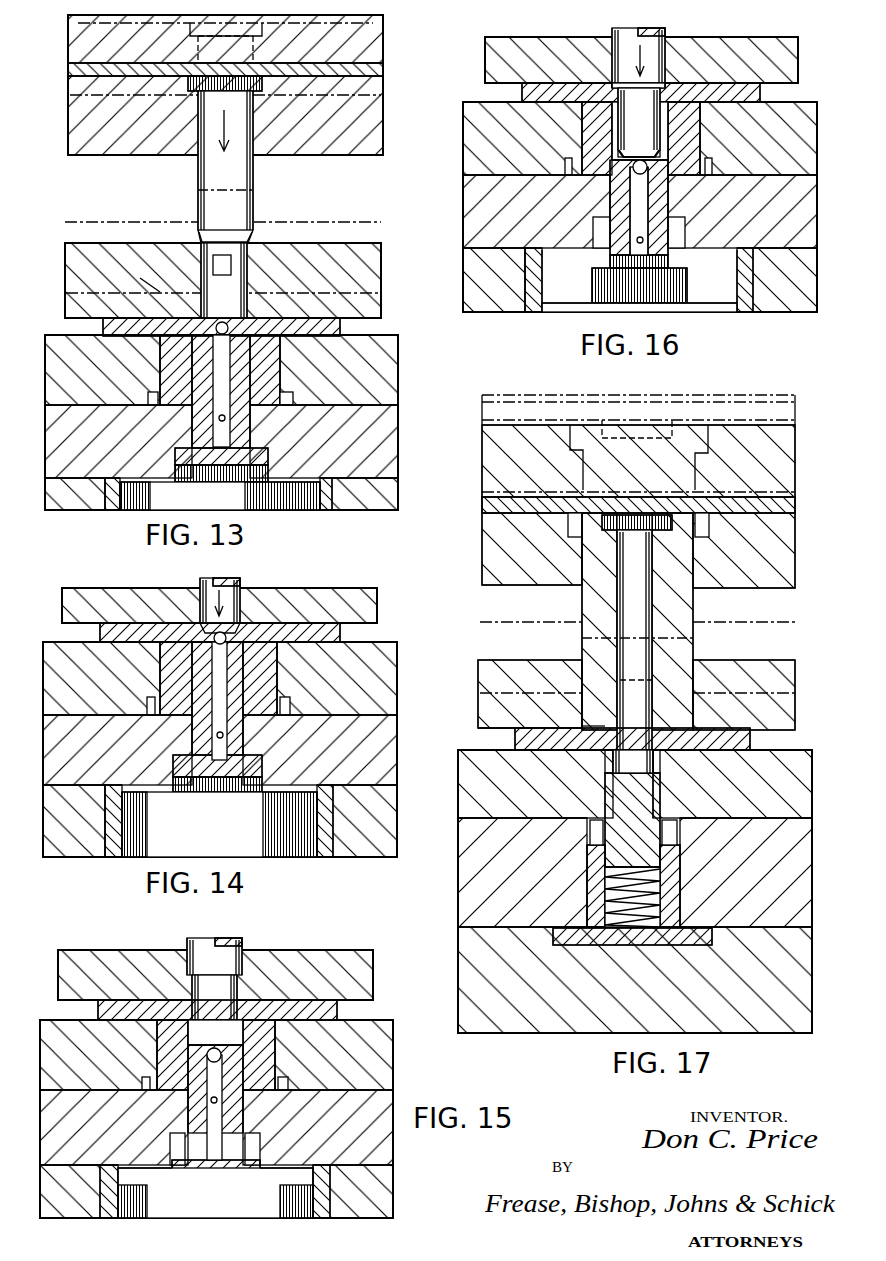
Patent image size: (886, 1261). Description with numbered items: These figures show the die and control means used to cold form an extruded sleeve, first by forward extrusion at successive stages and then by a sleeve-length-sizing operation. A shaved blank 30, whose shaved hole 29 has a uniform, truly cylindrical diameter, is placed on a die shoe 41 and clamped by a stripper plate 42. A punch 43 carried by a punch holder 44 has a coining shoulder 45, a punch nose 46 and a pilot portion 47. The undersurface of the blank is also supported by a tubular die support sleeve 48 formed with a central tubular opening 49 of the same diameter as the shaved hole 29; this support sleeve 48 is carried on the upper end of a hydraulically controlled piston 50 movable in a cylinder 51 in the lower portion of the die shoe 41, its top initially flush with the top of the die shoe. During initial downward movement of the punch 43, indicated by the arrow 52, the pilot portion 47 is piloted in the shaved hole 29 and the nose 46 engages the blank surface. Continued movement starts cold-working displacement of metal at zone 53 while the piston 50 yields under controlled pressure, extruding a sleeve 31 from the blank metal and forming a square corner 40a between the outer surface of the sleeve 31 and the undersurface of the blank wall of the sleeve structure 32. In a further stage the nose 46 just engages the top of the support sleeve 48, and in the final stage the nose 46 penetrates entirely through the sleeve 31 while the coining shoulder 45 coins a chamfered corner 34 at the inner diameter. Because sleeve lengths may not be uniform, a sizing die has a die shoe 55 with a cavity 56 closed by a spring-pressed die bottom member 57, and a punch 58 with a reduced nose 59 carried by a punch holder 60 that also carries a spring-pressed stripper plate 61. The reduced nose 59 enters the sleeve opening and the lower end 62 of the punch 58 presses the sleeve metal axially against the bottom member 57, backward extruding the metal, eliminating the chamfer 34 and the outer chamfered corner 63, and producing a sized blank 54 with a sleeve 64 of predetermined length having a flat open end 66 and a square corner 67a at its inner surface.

In FIG. 13, the shaved hole 29 is at (140, 277).
In FIG. 13, the shaved blank 30 is at (344, 330).
In FIG. 14, the shaved blank 30 is at (345, 637).
In FIG. 16, the sleeve 31 is at (530, 114).
In FIG. 16, the sleeve structure 32 is at (762, 96).
In FIG. 16, the chamfered corner 34 is at (667, 94).
In FIG. 15, the square corner 40a is at (246, 1026).
In FIG. 16, the square corner 40a is at (670, 115).
In FIG. 13, the die shoe 41 is at (364, 372).
In FIG. 13, the stripper plate 42 is at (96, 280).
In FIG. 14, the stripper plate 42 is at (100, 608).
In FIG. 15, the stripper plate 42 is at (100, 988).
In FIG. 16, the stripper plate 42 is at (522, 62).
In FIG. 13, the punch 43 is at (242, 168).
In FIG. 15, the punch 43 is at (200, 952).
In FIG. 16, the punch 43 is at (667, 33).
In FIG. 13, the punch holder 44 is at (345, 118).
In FIG. 13, the coining shoulder 45 is at (244, 241).
In FIG. 15, the coining shoulder 45 is at (233, 956).
In FIG. 16, the coining shoulder 45 is at (618, 62).
In FIG. 13, the punch nose 46 is at (244, 268).
In FIG. 14, the punch nose 46 is at (228, 596).
In FIG. 15, the punch nose 46 is at (226, 1020).
In FIG. 16, the punch nose 46 is at (660, 125).
In FIG. 13, the pilot portion 47 is at (228, 325).
In FIG. 14, the pilot portion 47 is at (226, 638).
In FIG. 15, the pilot portion 47 is at (222, 1056).
In FIG. 16, the pilot portion 47 is at (646, 175).
In FIG. 13, the tubular die support sleeve 48 is at (255, 436).
In FIG. 14, the tubular die support sleeve 48 is at (236, 739).
In FIG. 15, the tubular die support sleeve 48 is at (238, 1117).
In FIG. 16, the tubular die support sleeve 48 is at (656, 255).
In FIG. 13, the central tubular opening 49 is at (218, 418).
In FIG. 14, the central tubular opening 49 is at (215, 732).
In FIG. 15, the central tubular opening 49 is at (210, 1105).
In FIG. 16, the central tubular opening 49 is at (636, 243).
In FIG. 13, the piston 50 is at (300, 504).
In FIG. 14, the piston 50 is at (230, 832).
In FIG. 15, the piston 50 is at (212, 1208).
In FIG. 16, the piston 50 is at (577, 306).
In FIG. 13, the cylinder 51 is at (116, 500).
In FIG. 14, the cylinder 51 is at (115, 846).
In FIG. 15, the cylinder 51 is at (328, 1215).
In FIG. 16, the cylinder 51 is at (535, 296).
In FIG. 13, the arrow 52 is at (214, 130).
In FIG. 14, the zone 53 is at (205, 630).
In FIG. 17, the sized blank 54 is at (752, 738).
In FIG. 17, the die shoe 55 is at (505, 880).
In FIG. 17, the cavity 56 is at (662, 798).
In FIG. 17, the die bottom member 57 is at (623, 793).
In FIG. 17, the punch 58 is at (690, 605).
In FIG. 17, the reduced nose 59 is at (633, 733).
In FIG. 17, the punch holder 60 is at (755, 546).
In FIG. 17, the stripper plate 61 is at (770, 688).
In FIG. 17, the lower end 62 is at (590, 723).
In FIG. 16, the outer chamfered corner 63 is at (662, 142).
In FIG. 17, the sleeve 64 is at (600, 721).
In FIG. 17, the flat open end 66 is at (657, 776).
In FIG. 17, the square corner 67a is at (613, 725).